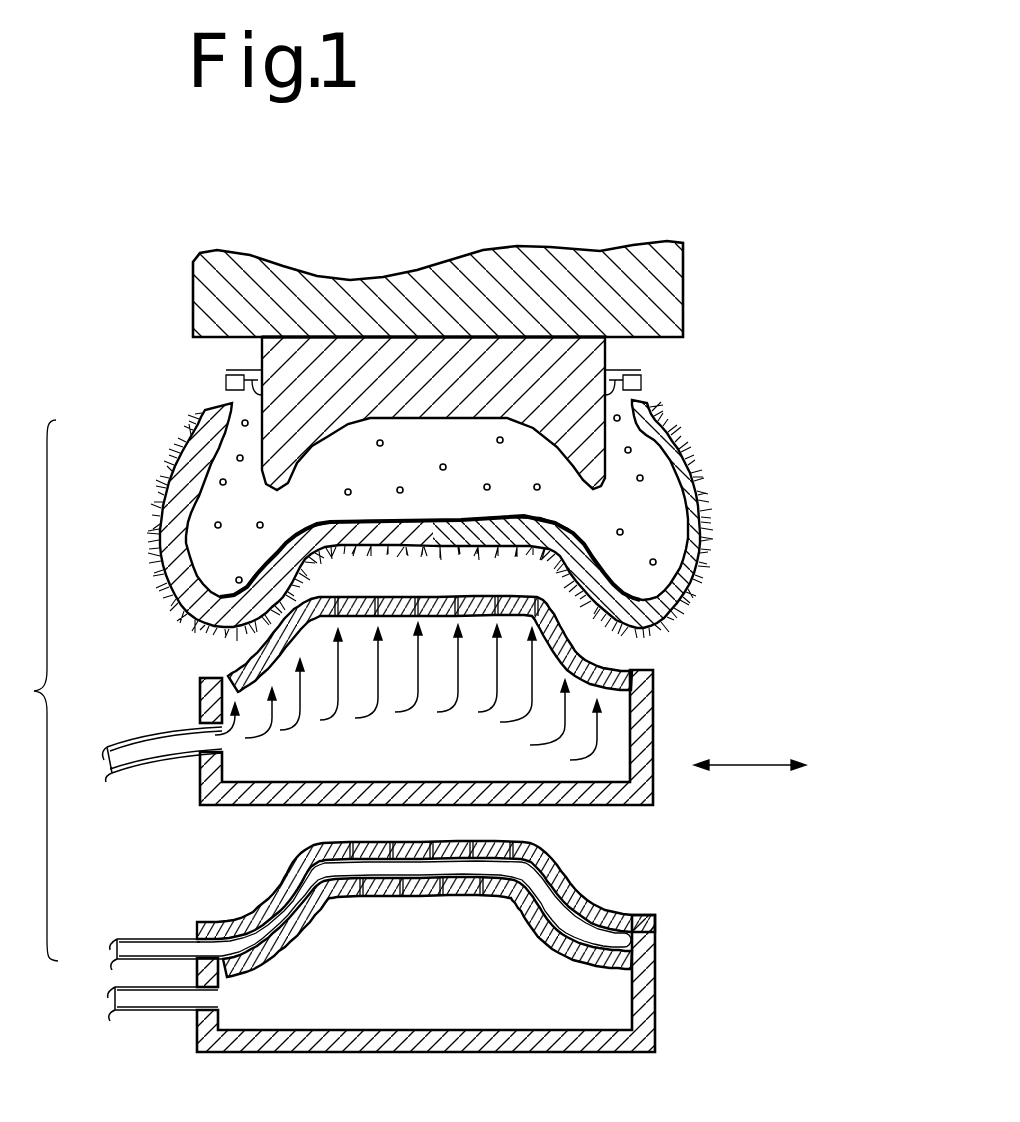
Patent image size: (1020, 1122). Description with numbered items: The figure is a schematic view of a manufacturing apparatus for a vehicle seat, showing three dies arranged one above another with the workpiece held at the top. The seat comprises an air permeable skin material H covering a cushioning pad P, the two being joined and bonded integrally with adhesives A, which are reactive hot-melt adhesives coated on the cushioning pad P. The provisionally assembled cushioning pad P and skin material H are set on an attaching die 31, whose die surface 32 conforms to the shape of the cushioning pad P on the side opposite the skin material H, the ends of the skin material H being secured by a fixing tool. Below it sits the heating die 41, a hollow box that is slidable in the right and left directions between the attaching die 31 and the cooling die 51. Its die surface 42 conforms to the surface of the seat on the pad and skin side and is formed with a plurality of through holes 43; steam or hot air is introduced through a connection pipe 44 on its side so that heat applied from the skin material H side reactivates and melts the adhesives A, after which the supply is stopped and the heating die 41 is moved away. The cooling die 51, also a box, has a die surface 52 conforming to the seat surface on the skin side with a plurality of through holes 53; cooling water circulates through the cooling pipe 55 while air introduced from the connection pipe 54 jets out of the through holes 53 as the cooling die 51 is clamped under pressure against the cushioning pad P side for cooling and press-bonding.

The attaching die 31 is at (472, 368).
The die surface 32 is at (330, 430).
The skin material H is at (697, 489).
The cushioning pad P is at (643, 532).
The adhesives A is at (332, 498).
The heating die 41 is at (653, 712).
The die surface 42 is at (308, 600).
The through holes 43 is at (563, 636).
The connection pipe 44 is at (154, 745).
The cooling die 51 is at (664, 995).
The die surface 52 is at (577, 890).
The through holes 53 is at (270, 897).
The connection pipe 54 is at (113, 1008).
The cooling pipe 55 is at (125, 949).